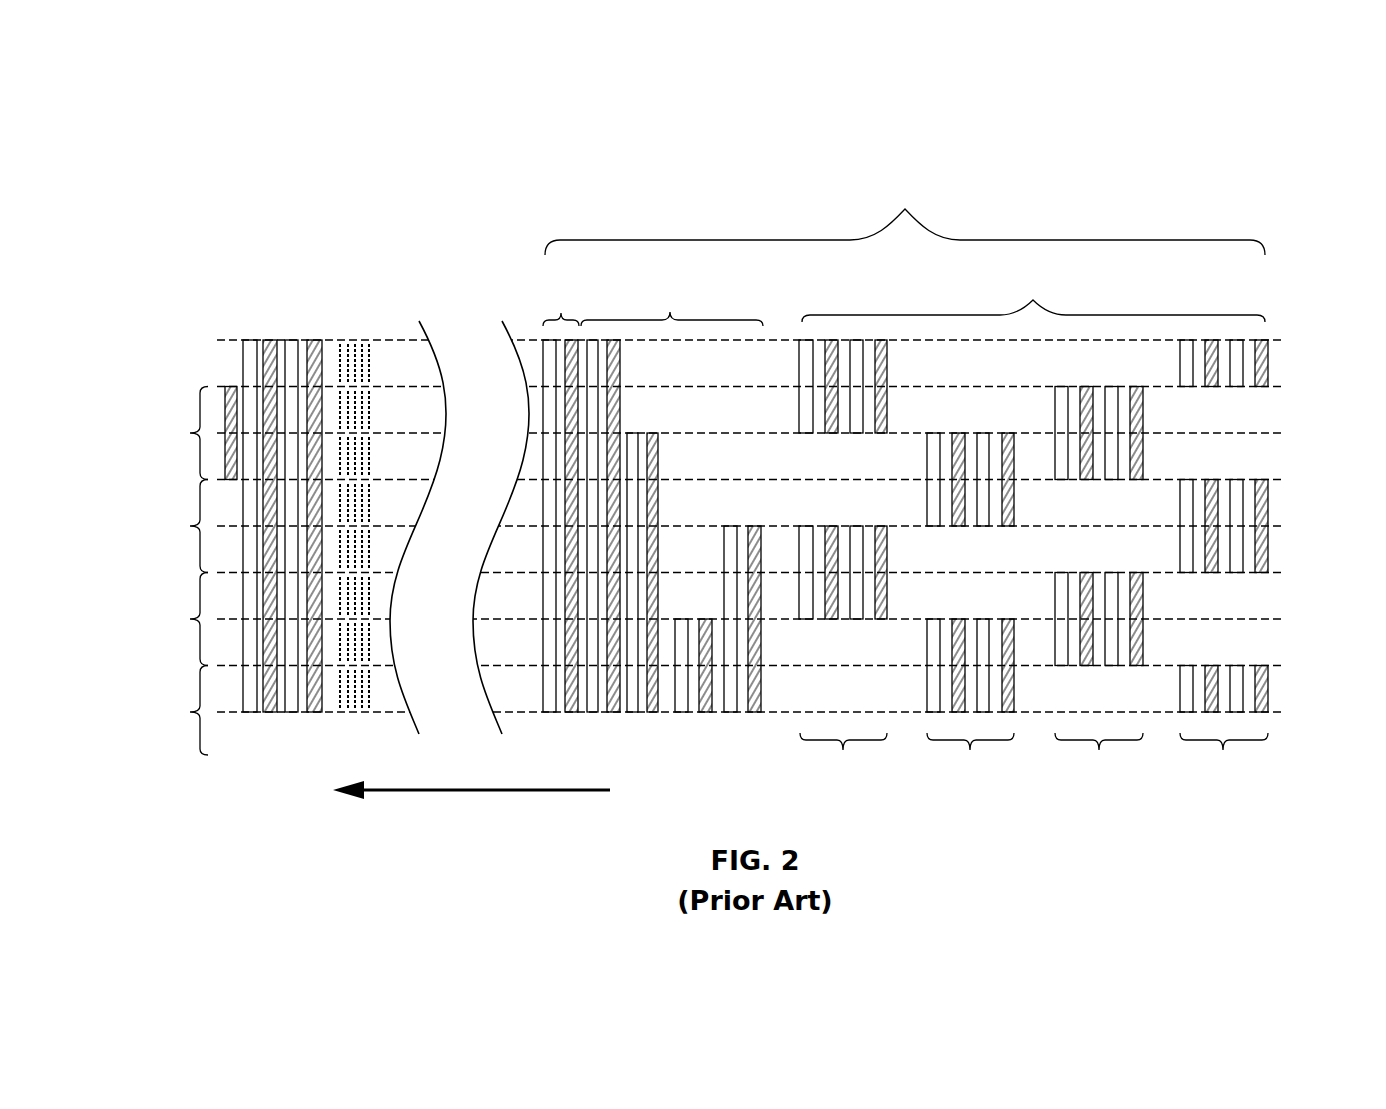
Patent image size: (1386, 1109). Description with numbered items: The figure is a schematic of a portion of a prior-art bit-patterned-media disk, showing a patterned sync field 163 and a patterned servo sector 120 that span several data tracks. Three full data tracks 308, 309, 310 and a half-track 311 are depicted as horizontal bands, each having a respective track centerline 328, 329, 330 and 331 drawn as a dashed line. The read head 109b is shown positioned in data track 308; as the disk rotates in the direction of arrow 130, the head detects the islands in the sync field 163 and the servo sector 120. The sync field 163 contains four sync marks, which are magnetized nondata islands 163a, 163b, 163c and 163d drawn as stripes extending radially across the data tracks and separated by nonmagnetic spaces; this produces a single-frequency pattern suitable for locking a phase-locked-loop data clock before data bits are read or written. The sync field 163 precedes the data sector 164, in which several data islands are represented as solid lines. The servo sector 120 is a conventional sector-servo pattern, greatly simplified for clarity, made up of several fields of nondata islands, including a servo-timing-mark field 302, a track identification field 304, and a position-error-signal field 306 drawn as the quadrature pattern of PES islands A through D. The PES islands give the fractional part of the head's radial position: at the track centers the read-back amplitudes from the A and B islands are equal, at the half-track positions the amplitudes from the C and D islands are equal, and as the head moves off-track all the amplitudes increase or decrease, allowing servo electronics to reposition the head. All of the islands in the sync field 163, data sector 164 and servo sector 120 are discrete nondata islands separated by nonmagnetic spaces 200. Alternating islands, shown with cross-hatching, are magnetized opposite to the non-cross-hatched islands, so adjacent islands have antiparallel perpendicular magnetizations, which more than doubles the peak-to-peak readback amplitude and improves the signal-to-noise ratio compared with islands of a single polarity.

The read head 109b is at (231, 386).
The servo sector 120 is at (905, 217).
The arrow 130 is at (431, 792).
The sync field 163 is at (259, 553).
The sync mark 163a is at (250, 712).
The sync mark 163b is at (271, 712).
The sync mark 163c is at (292, 712).
The sync mark 163d is at (315, 712).
The data sector 164 is at (338, 333).
The nonmagnetic spaces 200 is at (262, 690).
The servo-timing-mark (STM) field 302 is at (537, 321).
The track ID (TID) field 304 is at (738, 317).
The PES blocks field 306 is at (879, 314).
The data track 308 is at (175, 433).
The data track 309 is at (175, 526).
The data track 310 is at (175, 619).
The half-track 311 is at (174, 711).
The track centerline 328 is at (1276, 433).
The track centerline 329 is at (1276, 526).
The track centerline 330 is at (1276, 619).
The track centerline 331 is at (1276, 712).